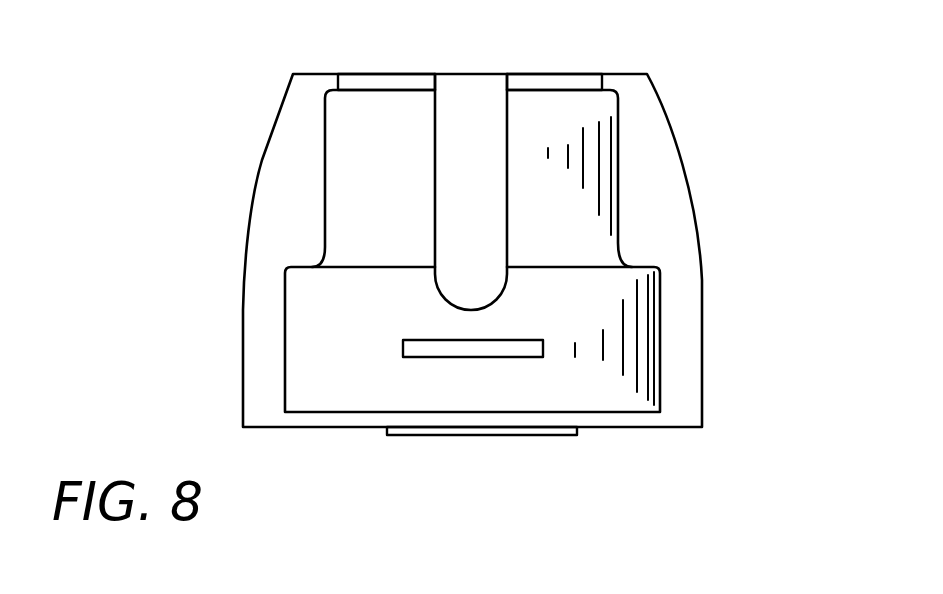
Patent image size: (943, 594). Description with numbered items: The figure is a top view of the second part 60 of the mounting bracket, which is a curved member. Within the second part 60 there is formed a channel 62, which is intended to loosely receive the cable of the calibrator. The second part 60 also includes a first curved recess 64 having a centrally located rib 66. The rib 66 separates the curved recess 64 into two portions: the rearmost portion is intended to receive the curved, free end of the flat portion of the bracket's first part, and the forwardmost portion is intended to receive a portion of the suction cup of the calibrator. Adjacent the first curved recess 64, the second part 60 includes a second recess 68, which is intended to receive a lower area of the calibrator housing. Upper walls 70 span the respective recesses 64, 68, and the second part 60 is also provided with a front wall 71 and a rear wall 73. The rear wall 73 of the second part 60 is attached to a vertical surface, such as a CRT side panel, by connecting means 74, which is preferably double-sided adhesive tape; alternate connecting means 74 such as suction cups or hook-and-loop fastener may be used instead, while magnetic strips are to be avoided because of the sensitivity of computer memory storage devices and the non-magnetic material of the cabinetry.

The second part 60 is at (765, 285).
The channel 62 is at (507, 180).
The first curved recess 64 is at (307, 362).
The rib 66 is at (422, 340).
The second recess 68 is at (396, 170).
The upper walls 70 is at (272, 200).
The front wall 71 is at (395, 73).
The rear wall 73 is at (670, 415).
The connecting means 74 is at (592, 428).